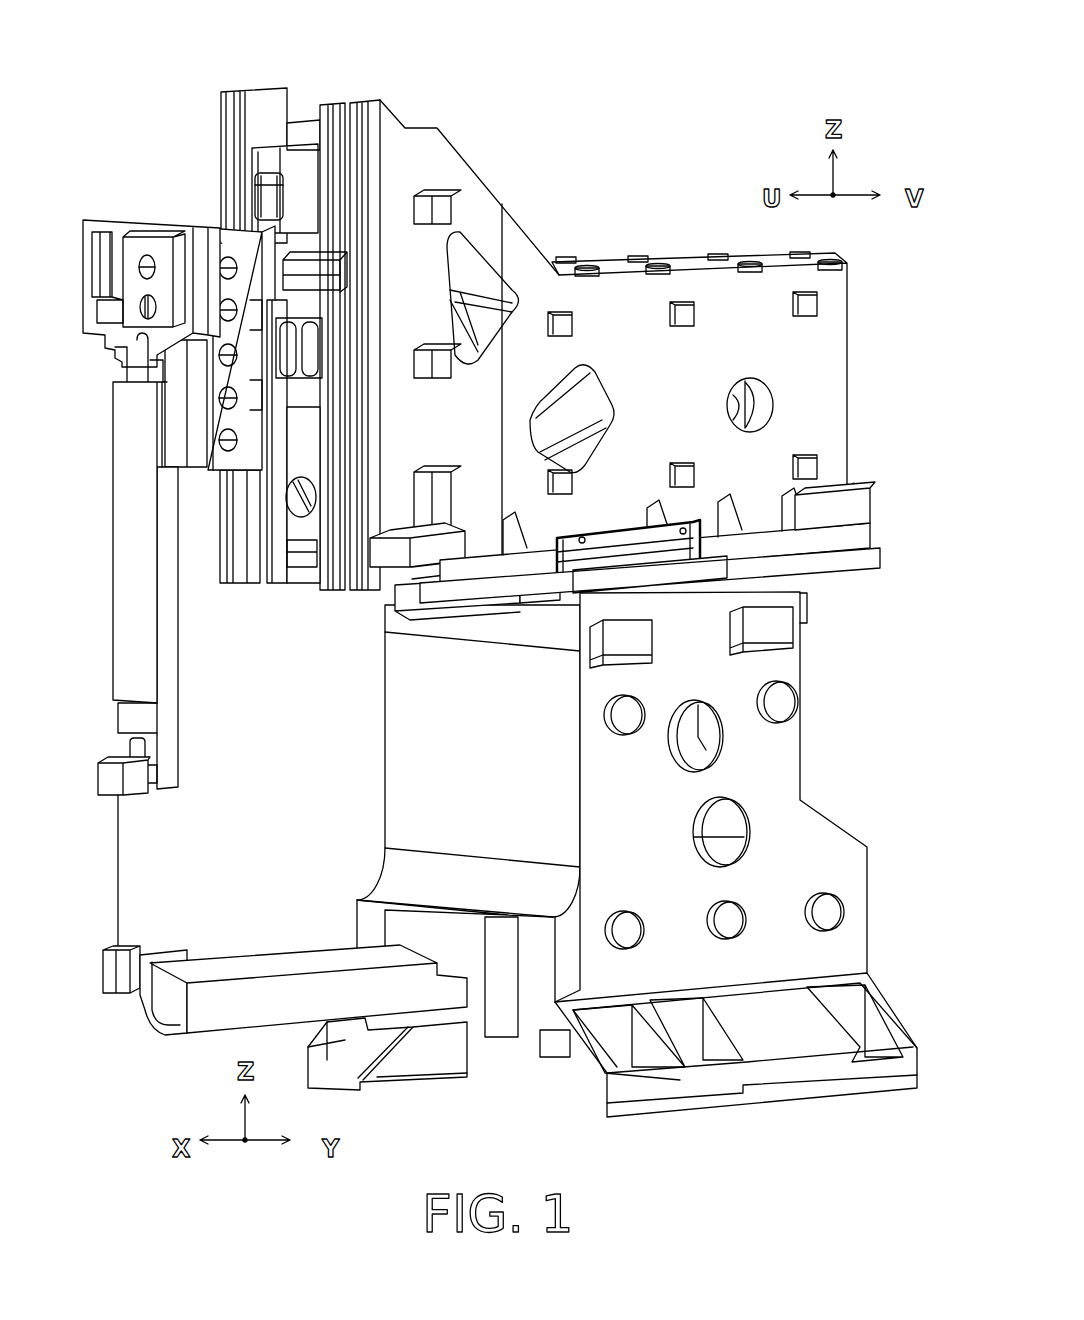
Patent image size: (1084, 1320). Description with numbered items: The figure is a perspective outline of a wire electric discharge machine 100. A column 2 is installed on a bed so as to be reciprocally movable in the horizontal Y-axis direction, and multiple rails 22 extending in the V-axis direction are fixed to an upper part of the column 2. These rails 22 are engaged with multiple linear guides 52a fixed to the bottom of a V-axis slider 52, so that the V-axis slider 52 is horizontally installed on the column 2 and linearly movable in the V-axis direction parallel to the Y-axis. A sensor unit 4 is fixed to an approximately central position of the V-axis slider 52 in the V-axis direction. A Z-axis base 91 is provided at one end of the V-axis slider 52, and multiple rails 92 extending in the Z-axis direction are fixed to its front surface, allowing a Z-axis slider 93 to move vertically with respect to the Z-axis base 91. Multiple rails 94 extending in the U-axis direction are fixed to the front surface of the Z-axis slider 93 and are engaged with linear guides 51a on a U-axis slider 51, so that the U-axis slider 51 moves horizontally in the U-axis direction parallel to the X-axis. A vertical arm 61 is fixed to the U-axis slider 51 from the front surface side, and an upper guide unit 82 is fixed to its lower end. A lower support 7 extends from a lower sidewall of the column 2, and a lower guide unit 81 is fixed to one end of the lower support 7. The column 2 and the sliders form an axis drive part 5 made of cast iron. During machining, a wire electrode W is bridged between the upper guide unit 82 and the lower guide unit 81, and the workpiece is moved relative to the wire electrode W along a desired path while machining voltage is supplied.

The wire electric discharge machine 100 is at (524, 36).
The column 2 is at (862, 890).
The sensor unit 4 is at (750, 600).
The axis drive part 5 is at (599, 168).
The lower support 7 is at (300, 968).
The rails 22 is at (512, 582).
The U-axis slider 51 is at (160, 253).
The linear guides 51a is at (240, 250).
The V-axis slider 52 is at (790, 385).
The linear guides 52a is at (525, 586).
The vertical arm 61 is at (113, 503).
The lower guide unit 81 is at (112, 1000).
The upper guide unit 82 is at (113, 780).
The Z-axis base 91 is at (470, 187).
The rails 92 is at (325, 130).
The Z-axis slider 93 is at (303, 410).
The rails 94 is at (340, 265).
The wire electrode W is at (118, 853).